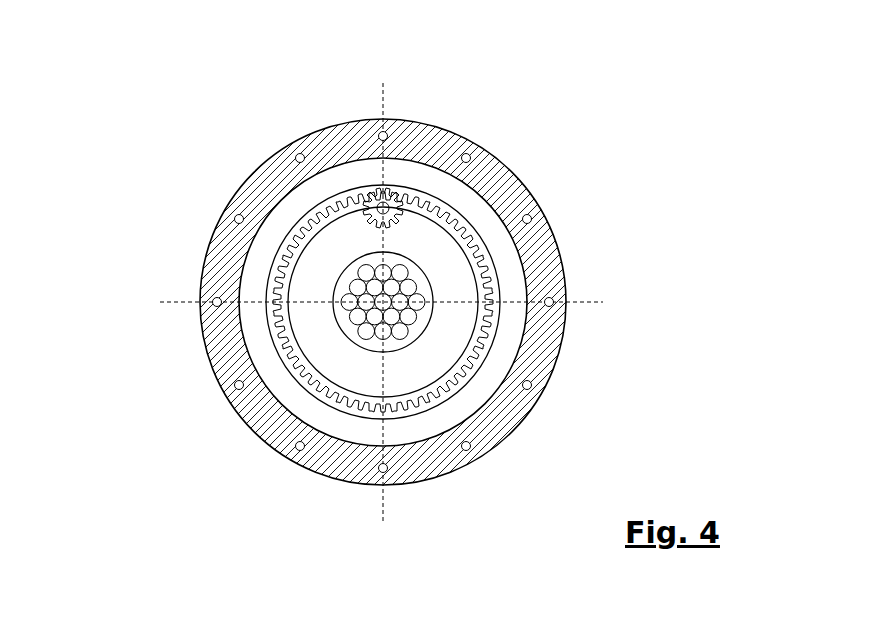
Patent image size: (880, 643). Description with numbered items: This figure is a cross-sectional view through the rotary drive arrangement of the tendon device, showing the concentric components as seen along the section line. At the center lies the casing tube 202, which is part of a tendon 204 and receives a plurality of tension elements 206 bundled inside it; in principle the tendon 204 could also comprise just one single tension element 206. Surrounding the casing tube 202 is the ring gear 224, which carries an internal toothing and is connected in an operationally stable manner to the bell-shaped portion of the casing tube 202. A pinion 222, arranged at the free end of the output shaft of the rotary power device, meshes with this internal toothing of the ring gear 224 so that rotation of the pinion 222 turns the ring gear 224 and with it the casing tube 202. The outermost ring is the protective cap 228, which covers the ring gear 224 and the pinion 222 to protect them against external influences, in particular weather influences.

The casing tube 202 is at (337, 278).
The tendon 204 is at (253, 334).
The tension element 206 is at (377, 315).
The pinion 222 is at (378, 202).
The ring gear 224 is at (415, 202).
The protective cap 228 is at (533, 200).